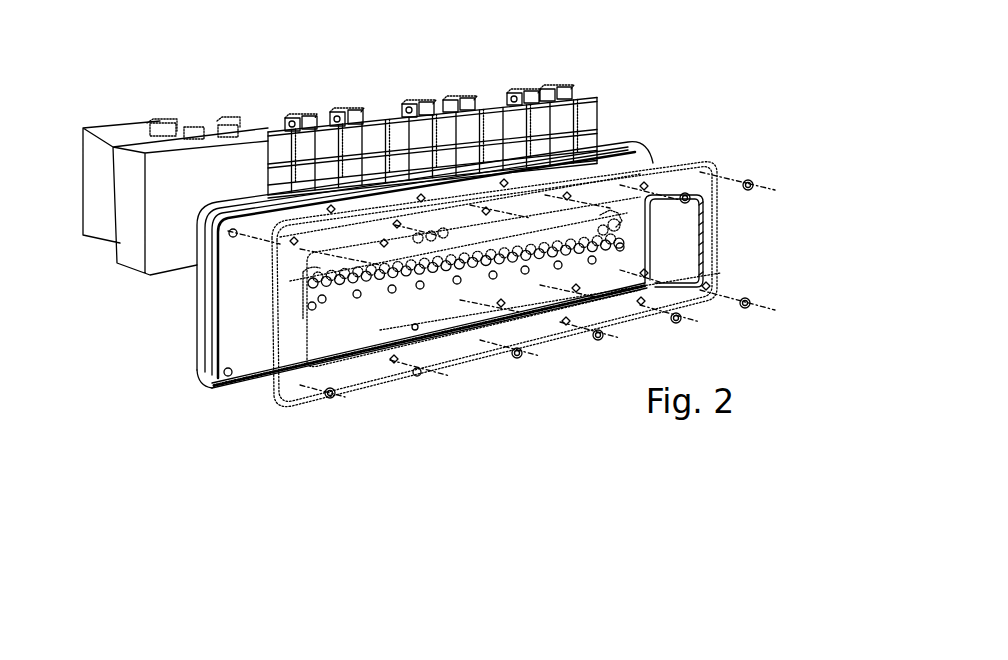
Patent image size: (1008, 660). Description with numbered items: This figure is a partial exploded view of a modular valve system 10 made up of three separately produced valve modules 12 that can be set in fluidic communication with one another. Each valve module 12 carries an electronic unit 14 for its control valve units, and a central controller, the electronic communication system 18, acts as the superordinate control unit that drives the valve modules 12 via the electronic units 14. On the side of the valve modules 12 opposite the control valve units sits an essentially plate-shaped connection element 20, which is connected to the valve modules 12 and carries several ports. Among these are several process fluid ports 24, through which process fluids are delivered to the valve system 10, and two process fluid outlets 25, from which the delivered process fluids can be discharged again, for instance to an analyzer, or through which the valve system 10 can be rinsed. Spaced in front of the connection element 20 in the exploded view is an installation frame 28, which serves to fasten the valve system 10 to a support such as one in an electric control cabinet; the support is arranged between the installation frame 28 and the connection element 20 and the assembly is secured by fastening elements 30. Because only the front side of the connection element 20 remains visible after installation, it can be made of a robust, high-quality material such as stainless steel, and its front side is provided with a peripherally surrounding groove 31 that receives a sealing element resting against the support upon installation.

The valve system 10 is at (218, 80).
The valve module 12 is at (302, 90).
The electronic unit 14 is at (283, 153).
The electronic communication system 18 is at (126, 130).
The connection element 20 is at (240, 325).
The process fluid port 24 is at (360, 285).
The process fluid outlet 25 is at (620, 247).
The installation frame 28 is at (698, 170).
The fastening element 30 is at (748, 185).
The peripherally surrounding groove 31 is at (227, 386).